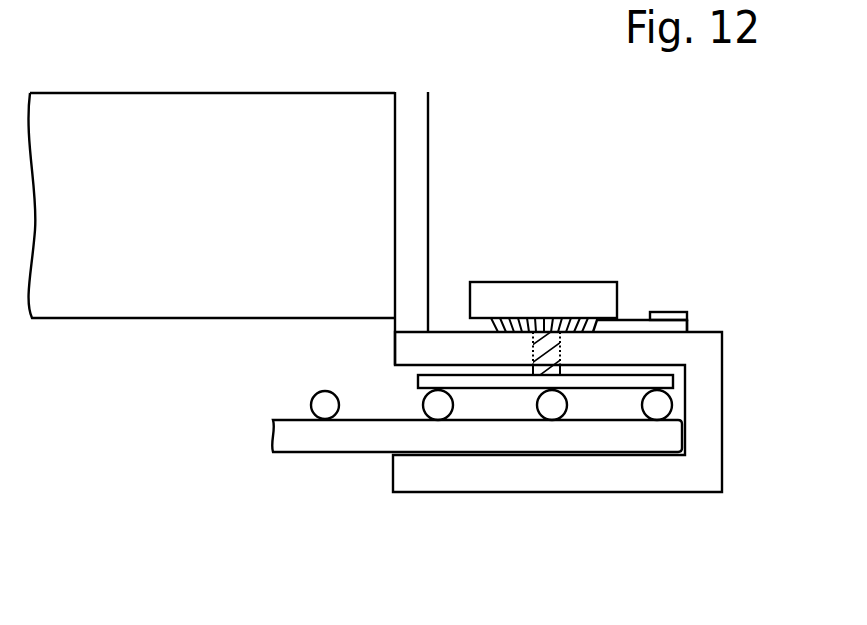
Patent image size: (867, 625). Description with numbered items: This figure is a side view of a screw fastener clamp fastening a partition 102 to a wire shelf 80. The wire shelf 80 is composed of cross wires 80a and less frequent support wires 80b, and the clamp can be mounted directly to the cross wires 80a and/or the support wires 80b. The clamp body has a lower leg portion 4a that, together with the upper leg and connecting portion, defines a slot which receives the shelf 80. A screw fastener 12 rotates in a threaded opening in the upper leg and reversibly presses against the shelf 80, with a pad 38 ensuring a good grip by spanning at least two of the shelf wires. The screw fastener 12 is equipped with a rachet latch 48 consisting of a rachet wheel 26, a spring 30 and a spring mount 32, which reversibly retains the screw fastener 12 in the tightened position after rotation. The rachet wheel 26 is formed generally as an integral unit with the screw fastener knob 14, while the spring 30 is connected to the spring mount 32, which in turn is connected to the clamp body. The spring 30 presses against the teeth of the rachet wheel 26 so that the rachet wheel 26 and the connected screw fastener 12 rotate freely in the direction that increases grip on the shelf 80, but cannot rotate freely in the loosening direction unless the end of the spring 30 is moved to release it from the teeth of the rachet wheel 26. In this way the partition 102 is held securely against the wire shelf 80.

The partition 102 is at (157, 277).
The lower leg portion 4a is at (412, 473).
The screw fastener 12 is at (603, 277).
The screw fastener knob 14 is at (490, 295).
The rachet wheel 26 is at (530, 320).
The spring 30 is at (634, 324).
The rachet latch 48 is at (680, 310).
The spring mount 32 is at (686, 316).
The pad 38 is at (427, 383).
The cross wires 80a is at (311, 405).
The wire shelf 80 is at (328, 457).
The support wires 80b is at (545, 435).